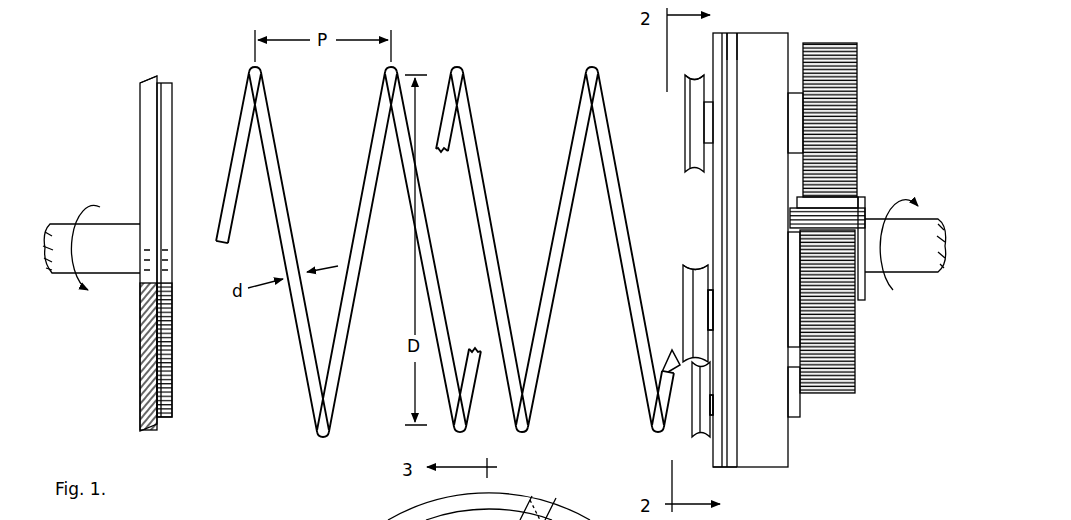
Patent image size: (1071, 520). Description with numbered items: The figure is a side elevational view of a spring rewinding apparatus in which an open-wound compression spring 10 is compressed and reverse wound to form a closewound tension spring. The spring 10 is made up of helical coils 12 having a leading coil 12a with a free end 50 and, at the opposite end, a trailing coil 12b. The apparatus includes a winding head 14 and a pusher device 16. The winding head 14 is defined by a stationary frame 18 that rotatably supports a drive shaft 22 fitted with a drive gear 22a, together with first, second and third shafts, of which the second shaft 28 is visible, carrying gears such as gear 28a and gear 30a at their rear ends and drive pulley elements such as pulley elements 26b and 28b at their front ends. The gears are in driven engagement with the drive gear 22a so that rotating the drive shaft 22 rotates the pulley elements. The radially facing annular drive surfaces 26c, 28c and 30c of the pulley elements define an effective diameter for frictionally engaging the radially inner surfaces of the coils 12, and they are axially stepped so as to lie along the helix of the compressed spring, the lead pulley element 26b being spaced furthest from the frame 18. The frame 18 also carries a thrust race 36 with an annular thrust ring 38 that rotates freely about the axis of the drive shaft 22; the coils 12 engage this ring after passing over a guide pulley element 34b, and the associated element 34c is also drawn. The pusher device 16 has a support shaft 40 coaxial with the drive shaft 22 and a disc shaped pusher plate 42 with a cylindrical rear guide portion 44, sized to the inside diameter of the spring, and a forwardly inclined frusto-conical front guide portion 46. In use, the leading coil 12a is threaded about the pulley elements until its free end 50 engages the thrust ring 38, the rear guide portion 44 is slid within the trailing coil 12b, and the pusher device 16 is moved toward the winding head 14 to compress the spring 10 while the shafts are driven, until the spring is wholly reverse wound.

The compression spring 10 is at (434, 293).
The coils 12 is at (362, 140).
The leading coil 12a is at (668, 380).
The trailing coil 12b is at (228, 165).
The winding head 14 is at (731, 263).
The pusher device 16 is at (115, 236).
The stationary frame 18 is at (769, 432).
The drive shaft 22 is at (878, 282).
The drive gear 22a is at (866, 200).
The drive pulley element 26b is at (686, 270).
The drive surface 26c is at (694, 262).
The second shaft 28 is at (525, 500).
The gear 28a is at (858, 50).
The drive pulley element 28b is at (685, 133).
The drive surface 28c is at (694, 82).
The gear 30a is at (857, 382).
The drive surface 30c is at (705, 280).
The guide pulley element 34b is at (692, 430).
The roller axle 34c is at (705, 366).
The thrust race 36 is at (727, 472).
The thrust ring 38 is at (733, 52).
The support shaft 40 is at (60, 212).
The pusher plate 42 is at (115, 118).
The rear guide portion 44 is at (166, 84).
The front guide portion 46 is at (155, 80).
The free end 50 is at (666, 360).